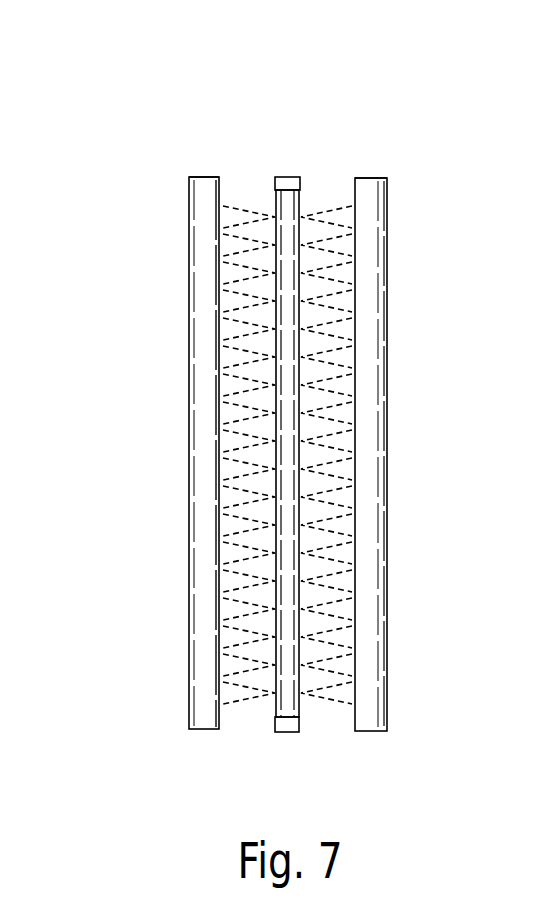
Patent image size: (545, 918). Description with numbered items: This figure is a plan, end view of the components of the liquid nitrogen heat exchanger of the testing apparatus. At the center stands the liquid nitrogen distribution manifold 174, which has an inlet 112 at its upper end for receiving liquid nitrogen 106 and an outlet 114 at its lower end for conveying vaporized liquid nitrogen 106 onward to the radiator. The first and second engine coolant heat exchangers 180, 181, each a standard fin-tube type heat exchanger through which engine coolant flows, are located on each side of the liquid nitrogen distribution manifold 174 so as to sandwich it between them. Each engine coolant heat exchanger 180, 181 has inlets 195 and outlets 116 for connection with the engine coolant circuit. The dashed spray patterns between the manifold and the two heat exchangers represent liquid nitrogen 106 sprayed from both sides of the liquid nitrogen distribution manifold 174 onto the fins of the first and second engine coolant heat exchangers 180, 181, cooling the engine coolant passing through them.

The liquid nitrogen 106 is at (339, 439).
The inlet 112 is at (288, 176).
The outlet 114 is at (291, 735).
The outlets 116 is at (291, 383).
The liquid nitrogen distribution manifold 174 is at (370, 396).
The first engine coolant heat exchanger 180 is at (424, 454).
The second engine coolant heat exchanger 181 is at (154, 453).
The inlets 195 is at (205, 177).